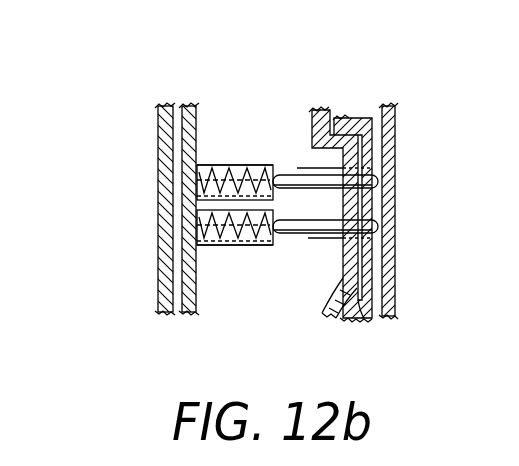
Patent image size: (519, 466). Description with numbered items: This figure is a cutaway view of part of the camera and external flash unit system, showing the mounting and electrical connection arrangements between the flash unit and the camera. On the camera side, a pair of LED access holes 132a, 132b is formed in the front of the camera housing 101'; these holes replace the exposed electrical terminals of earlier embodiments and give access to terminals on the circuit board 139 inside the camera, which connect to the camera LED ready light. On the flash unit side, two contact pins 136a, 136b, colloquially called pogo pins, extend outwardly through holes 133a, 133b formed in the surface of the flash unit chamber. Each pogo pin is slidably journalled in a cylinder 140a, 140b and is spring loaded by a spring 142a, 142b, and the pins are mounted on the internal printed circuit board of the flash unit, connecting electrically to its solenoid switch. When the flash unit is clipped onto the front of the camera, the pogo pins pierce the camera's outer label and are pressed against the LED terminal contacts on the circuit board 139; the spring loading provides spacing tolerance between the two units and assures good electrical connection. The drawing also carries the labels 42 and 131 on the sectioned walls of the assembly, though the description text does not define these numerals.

The gap 42 is at (177, 136).
The camera housing 101' is at (339, 173).
The wall 131 is at (158, 262).
The LED access hole 132a is at (396, 166).
The LED access hole 132b is at (396, 235).
The hole 133a is at (309, 168).
The hole 133b is at (313, 238).
The contact pin 136a is at (288, 170).
The contact pin 136b is at (288, 245).
The circuit board 139 is at (398, 116).
The cylinder 140a is at (205, 164).
The cylinder 140b is at (200, 247).
The spring 142a is at (197, 175).
The spring 142b is at (197, 219).